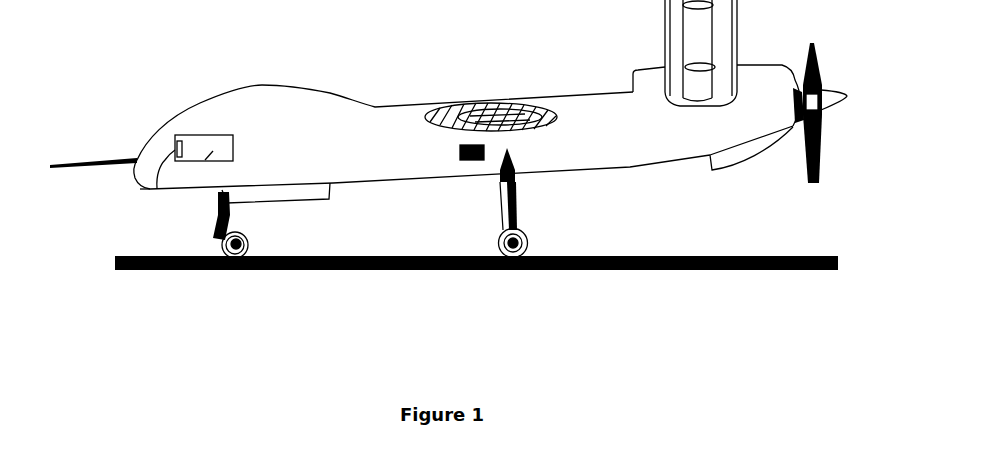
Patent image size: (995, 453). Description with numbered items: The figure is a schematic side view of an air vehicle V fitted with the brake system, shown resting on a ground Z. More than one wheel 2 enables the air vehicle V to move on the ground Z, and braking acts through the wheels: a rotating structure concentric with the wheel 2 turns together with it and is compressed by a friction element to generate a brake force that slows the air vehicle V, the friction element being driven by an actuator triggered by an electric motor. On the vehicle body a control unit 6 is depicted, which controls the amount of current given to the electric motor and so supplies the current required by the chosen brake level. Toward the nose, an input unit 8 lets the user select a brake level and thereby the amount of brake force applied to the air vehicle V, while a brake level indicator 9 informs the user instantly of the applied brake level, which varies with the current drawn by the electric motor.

The air vehicle V is at (322, 107).
The input unit 8 is at (213, 151).
The brake level indicator 9 is at (140, 189).
The control unit 6 is at (470, 162).
The wheel 2 is at (530, 240).
The ground Z is at (573, 270).